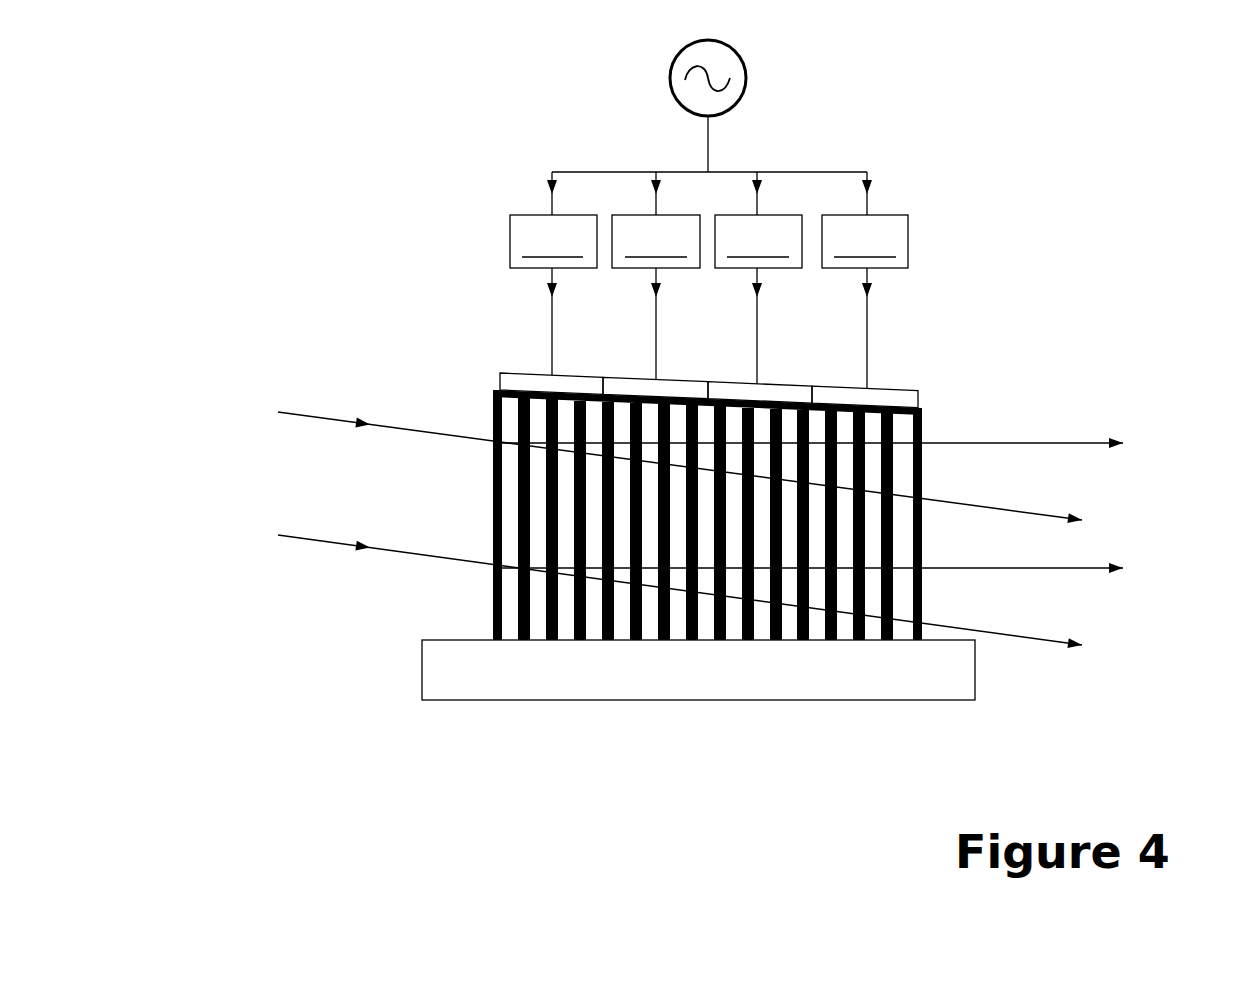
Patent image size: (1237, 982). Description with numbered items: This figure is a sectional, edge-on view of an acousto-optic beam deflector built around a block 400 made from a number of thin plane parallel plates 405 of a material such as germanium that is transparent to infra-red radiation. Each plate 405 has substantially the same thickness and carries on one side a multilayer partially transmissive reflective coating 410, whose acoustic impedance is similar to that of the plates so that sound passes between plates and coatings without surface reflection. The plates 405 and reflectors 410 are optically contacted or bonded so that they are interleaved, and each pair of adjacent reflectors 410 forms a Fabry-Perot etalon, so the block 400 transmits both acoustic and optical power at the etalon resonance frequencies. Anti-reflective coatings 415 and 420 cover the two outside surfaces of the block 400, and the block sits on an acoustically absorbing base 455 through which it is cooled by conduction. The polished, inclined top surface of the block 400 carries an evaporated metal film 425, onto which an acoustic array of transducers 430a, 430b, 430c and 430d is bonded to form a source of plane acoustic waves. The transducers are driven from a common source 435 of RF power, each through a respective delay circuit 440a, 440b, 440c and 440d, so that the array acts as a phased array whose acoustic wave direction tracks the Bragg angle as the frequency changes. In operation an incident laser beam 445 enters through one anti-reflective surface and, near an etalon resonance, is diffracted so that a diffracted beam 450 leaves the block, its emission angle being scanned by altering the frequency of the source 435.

The block 400 is at (908, 790).
The thin plane parallel plates 405 is at (537, 628).
The multilayer partially transmissive reflective coating 410 is at (748, 630).
The anti-reflective coating 415 is at (493, 590).
The anti-reflective coating 420 is at (922, 428).
The metal film 425 is at (885, 400).
The transducer 430a is at (535, 373).
The transducer 430b is at (638, 378).
The transducer 430c is at (738, 382).
The transducer 430d is at (845, 390).
The common source of RF power 435 is at (746, 75).
The delay circuit 440a is at (553, 295).
The delay circuit 440b is at (656, 297).
The delay circuit 440c is at (758, 299).
The delay circuit 440d is at (865, 301).
The laser beam 445 is at (268, 410).
The diffracted beam 450 is at (1133, 442).
The acoustically absorbing base 455 is at (975, 680).